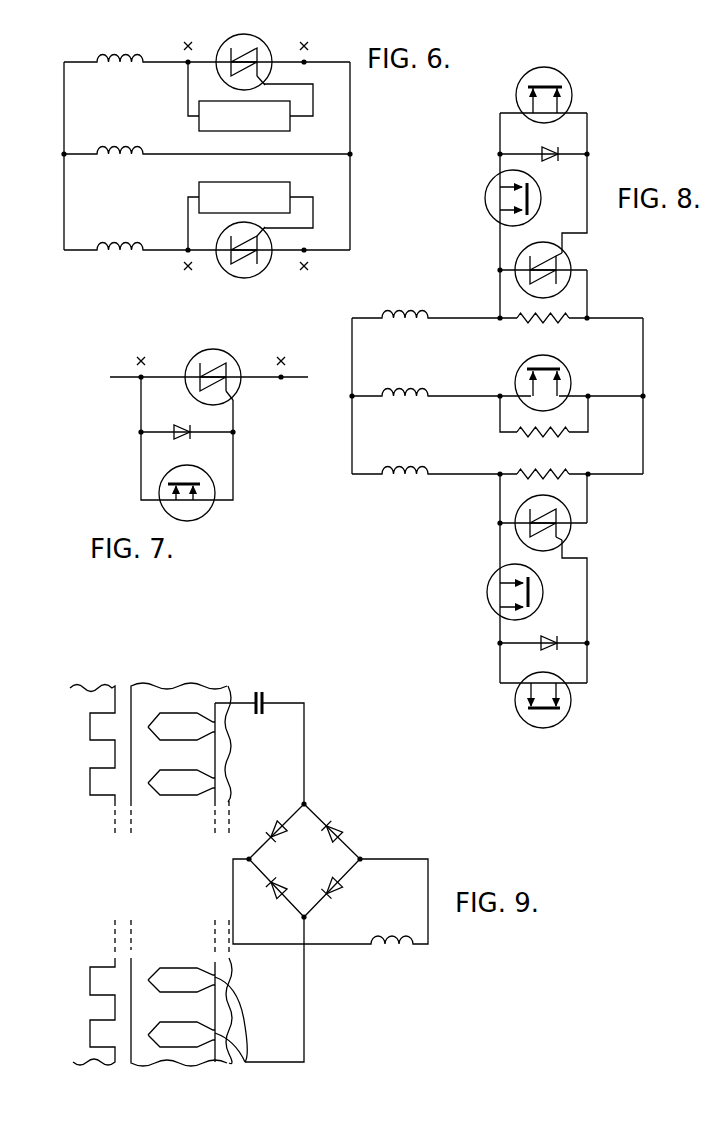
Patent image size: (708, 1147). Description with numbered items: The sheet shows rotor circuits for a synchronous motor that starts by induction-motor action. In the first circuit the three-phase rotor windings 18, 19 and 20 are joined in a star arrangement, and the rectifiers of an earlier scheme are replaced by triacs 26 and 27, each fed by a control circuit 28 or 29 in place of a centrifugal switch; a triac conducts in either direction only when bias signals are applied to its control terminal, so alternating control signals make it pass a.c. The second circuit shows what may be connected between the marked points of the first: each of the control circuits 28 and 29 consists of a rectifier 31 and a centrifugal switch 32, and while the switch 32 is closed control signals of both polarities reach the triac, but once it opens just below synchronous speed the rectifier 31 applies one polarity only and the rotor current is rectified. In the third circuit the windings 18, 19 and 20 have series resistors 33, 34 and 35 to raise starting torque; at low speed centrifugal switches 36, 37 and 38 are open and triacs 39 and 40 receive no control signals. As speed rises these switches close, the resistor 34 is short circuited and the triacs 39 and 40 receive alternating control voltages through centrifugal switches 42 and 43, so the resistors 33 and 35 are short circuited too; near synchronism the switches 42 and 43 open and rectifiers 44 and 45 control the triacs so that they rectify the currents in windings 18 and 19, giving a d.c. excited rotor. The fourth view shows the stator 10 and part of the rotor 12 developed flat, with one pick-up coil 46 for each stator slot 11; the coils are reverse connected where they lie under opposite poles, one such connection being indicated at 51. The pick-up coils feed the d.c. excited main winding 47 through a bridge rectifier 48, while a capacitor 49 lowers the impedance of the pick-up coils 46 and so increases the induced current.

In FIG. 9, the stator 10 is at (115, 1063).
In FIG. 9, the slot 11 is at (90, 779).
In FIG. 9, the rotor 12 is at (193, 1070).
In FIG. 6, the rotor winding 18 is at (107, 55).
In FIG. 8, the rotor winding 18 is at (430, 306).
In FIG. 6, the rotor winding 19 is at (148, 254).
In FIG. 8, the rotor winding 19 is at (410, 482).
In FIG. 6, the rotor winding 20 is at (86, 160).
In FIG. 8, the rotor winding 20 is at (372, 392).
In FIG. 6, the triac 26 is at (252, 50).
In FIG. 6, the triac 27 is at (266, 263).
In FIG. 6, the control circuit 28 is at (291, 126).
In FIG. 6, the control circuit 29 is at (291, 184).
In FIG. 7, the rectifier 31 is at (182, 436).
In FIG. 7, the centrifugal switch 32 is at (201, 511).
In FIG. 8, the series resistor 33 is at (568, 330).
In FIG. 8, the series resistor 34 is at (575, 430).
In FIG. 8, the series resistor 35 is at (568, 470).
In FIG. 8, the centrifugal switch 36 is at (492, 192).
In FIG. 8, the centrifugal switch 37 is at (570, 378).
In FIG. 8, the centrifugal switch 38 is at (502, 592).
In FIG. 8, the triac 39 is at (560, 270).
In FIG. 8, the triac 40 is at (520, 530).
In FIG. 8, the centrifugal switch 42 is at (562, 80).
In FIG. 8, the centrifugal switch 43 is at (567, 704).
In FIG. 8, the rectifier 44 is at (552, 145).
In FIG. 8, the rectifier 45 is at (556, 637).
In FIG. 9, the pick-up coil 46 is at (150, 783).
In FIG. 9, the main winding 47 is at (393, 948).
In FIG. 9, the bridge rectifier 48 is at (322, 857).
In FIG. 9, the capacitor 49 is at (268, 706).
In FIG. 9, the reverse connection 51 is at (244, 1062).